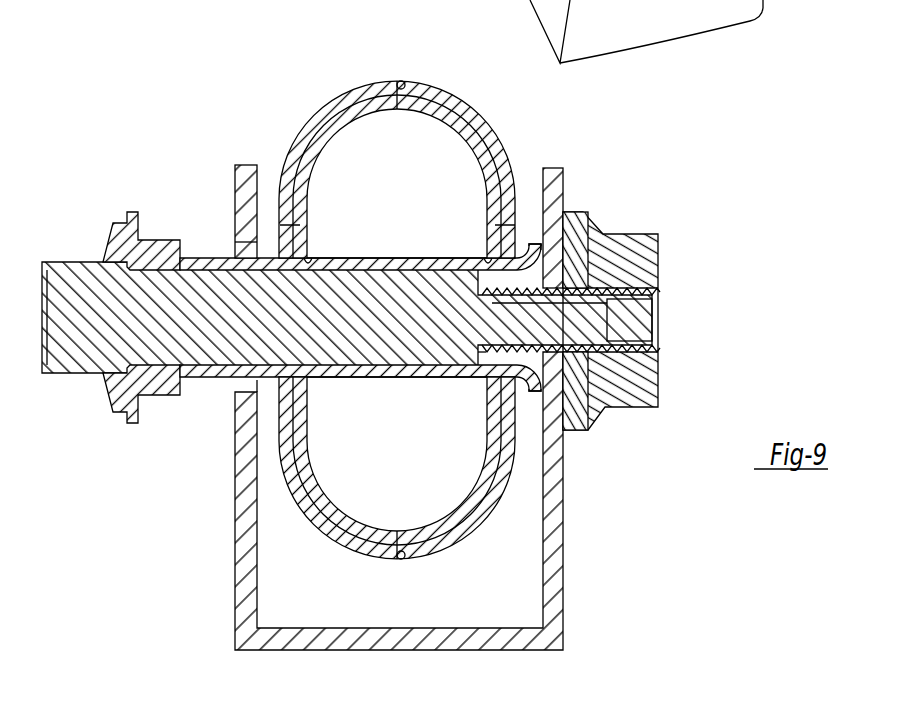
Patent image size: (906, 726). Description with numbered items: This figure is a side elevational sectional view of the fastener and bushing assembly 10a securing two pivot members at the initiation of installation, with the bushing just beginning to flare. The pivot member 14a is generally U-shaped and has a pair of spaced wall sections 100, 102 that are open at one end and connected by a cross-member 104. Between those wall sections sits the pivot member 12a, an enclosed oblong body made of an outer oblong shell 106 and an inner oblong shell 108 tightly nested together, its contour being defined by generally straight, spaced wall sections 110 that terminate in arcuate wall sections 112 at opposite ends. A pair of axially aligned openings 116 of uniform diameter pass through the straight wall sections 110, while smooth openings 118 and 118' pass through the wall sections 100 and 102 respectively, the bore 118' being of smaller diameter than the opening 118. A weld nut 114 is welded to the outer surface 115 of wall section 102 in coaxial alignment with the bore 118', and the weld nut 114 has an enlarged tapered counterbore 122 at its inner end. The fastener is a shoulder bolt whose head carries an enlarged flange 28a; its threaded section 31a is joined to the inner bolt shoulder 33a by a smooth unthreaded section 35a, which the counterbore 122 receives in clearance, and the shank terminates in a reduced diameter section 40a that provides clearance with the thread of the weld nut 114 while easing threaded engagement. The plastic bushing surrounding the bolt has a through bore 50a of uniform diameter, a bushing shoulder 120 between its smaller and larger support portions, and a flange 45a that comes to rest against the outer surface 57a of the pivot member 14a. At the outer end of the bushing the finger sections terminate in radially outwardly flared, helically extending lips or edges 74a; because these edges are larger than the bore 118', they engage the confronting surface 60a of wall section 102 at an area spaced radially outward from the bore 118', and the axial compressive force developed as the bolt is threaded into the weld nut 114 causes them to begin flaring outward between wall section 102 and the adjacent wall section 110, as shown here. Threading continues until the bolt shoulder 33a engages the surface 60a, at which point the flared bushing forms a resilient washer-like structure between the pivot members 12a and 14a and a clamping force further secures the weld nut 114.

The fastener and bushing assembly 10a is at (69, 218).
The pivot member 12a is at (324, 95).
The pivot member 14a is at (230, 592).
The flange 28a is at (107, 392).
The threaded section 31a is at (565, 320).
The bolt shoulder 33a is at (476, 356).
The smooth unthreaded section 35a is at (476, 283).
The reduced diameter section 40a is at (630, 323).
The flange 45a is at (135, 211).
The through bore 50a is at (205, 352).
The outer surface 57a is at (238, 180).
The confronting surface 60a is at (545, 500).
The flared lips or edges 74a is at (525, 243).
The wall section 100 is at (245, 497).
The wall section 102 is at (560, 582).
The cross-member 104 is at (462, 645).
The outer oblong shell 106 is at (303, 127).
The inner oblong shell 108 is at (345, 118).
The straight wall sections 110 is at (292, 200).
The arcuate wall sections 112 is at (400, 82).
The weld nut 114 is at (630, 252).
The outer surface 115 is at (563, 180).
The openings 116 is at (312, 268).
The opening 118 is at (360, 407).
The bore 118' is at (606, 407).
The bushing shoulder 120 is at (183, 256).
The tapered counterbore 122 is at (548, 275).